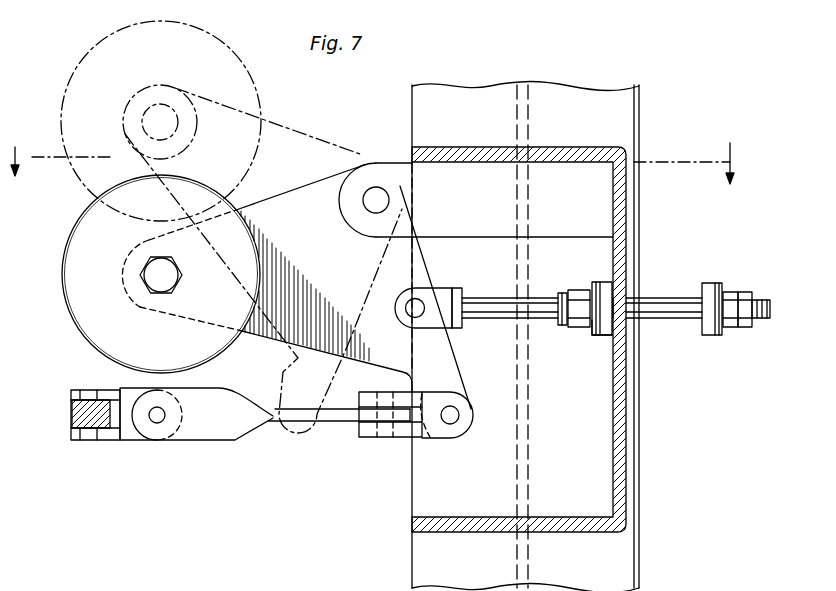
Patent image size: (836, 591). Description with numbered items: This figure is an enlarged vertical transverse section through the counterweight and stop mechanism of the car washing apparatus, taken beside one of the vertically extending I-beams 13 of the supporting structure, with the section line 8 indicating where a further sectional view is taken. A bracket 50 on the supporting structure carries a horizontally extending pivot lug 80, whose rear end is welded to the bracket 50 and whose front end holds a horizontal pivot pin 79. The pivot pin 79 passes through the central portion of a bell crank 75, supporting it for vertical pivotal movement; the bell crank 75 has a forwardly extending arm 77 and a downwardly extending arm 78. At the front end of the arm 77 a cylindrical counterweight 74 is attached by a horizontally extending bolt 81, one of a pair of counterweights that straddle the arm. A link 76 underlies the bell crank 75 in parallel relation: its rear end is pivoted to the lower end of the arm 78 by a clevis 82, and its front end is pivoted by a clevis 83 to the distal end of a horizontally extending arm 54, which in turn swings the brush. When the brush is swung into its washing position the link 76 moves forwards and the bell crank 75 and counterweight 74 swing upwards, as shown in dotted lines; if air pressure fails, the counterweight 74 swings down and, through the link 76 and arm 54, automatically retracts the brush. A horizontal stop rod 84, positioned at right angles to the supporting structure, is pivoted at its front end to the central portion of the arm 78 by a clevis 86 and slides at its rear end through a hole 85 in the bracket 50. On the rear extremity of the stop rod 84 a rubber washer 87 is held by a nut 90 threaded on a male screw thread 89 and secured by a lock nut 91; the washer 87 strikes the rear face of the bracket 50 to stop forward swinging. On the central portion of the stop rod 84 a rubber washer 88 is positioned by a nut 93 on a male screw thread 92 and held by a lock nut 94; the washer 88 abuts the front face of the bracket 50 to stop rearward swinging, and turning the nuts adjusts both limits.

The section line 8- 8 is at (372, 153).
The I-beam 13 is at (630, 542).
The bracket 50 is at (627, 442).
The arm 54 is at (71, 418).
The counterweight 74 is at (66, 303).
The bell crank 75 is at (325, 298).
The link 76 is at (243, 431).
The arm 77 is at (307, 197).
The arm 78 is at (449, 357).
The pivot pin 79 is at (376, 187).
The pivot lug 80 is at (568, 175).
The bolt 81 is at (157, 288).
The clevis 82 is at (428, 437).
The clevis 83 is at (113, 432).
The stop rod 84 is at (673, 303).
The hole 85 is at (619, 298).
The clevis 86 is at (458, 292).
The rubber washer 87 is at (712, 290).
The rubber washer 88 is at (607, 283).
The male screw thread 89 is at (764, 320).
The nut 90 is at (732, 292).
The lock nut 91 is at (744, 322).
The male screw thread 92 is at (565, 320).
The nut 93 is at (590, 320).
The lock nut 94 is at (573, 292).